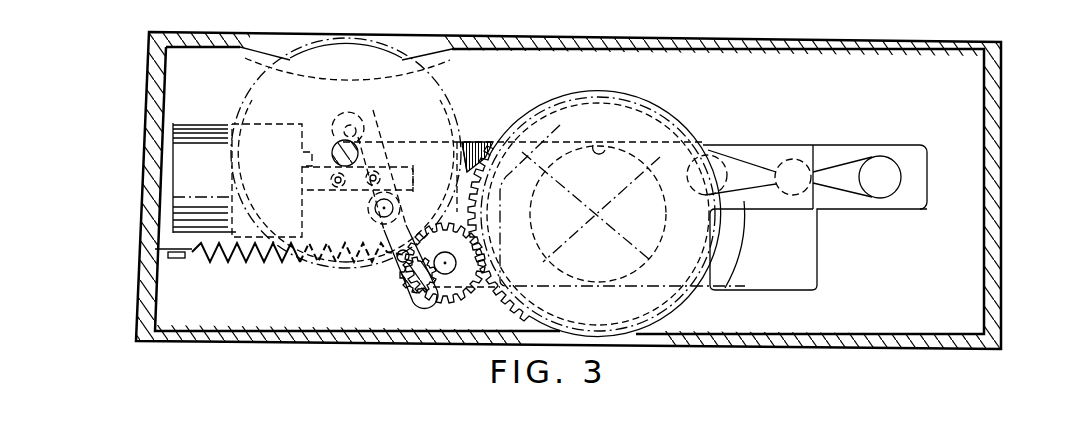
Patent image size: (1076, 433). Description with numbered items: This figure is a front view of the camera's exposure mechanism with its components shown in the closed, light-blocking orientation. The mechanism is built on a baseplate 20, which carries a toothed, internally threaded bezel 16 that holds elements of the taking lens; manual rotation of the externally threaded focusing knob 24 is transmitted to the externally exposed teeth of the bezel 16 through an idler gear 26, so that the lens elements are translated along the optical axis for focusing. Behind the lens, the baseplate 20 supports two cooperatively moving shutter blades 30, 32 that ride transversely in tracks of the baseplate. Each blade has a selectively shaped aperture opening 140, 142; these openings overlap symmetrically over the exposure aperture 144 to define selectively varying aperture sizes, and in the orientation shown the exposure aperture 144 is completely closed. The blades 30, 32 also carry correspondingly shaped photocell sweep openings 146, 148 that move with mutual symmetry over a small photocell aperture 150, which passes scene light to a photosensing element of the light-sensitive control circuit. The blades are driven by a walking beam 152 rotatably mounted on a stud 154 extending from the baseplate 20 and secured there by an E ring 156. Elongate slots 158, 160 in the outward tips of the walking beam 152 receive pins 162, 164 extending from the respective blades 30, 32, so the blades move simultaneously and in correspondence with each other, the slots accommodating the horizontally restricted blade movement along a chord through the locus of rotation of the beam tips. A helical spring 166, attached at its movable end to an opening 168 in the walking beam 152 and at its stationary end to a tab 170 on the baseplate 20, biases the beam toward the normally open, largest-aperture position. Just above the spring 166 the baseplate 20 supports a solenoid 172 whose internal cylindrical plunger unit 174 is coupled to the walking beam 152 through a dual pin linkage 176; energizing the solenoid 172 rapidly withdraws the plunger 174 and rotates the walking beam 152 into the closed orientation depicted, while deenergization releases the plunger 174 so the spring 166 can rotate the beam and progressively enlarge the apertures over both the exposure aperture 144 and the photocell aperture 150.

The bezel 16 is at (591, 214).
The baseplate 20 is at (964, 83).
The focusing knob 24 is at (340, 38).
The idler gear 26 is at (452, 274).
The shutter blade 30 is at (918, 201).
The shutter blade 32 is at (809, 150).
The aperture opening 140 is at (741, 228).
The aperture opening 142 is at (542, 153).
The exposure aperture 144 is at (601, 147).
The photocell sweep opening 146 is at (891, 200).
The photocell sweep opening 148 is at (736, 166).
The photocell aperture 150 is at (819, 158).
The walking beam 152 is at (384, 143).
The stud 154 is at (370, 219).
The E ring 156 is at (404, 180).
The elongate slot 158 is at (411, 302).
The elongate slot 160 is at (350, 130).
The pin 162 is at (407, 292).
The pin 164 is at (338, 125).
The helical spring 166 is at (236, 262).
The opening 168 is at (394, 244).
The tab 170 is at (173, 267).
The solenoid 172 is at (205, 124).
The plunger unit 174 is at (302, 156).
The dual pin linkage 176 is at (386, 167).